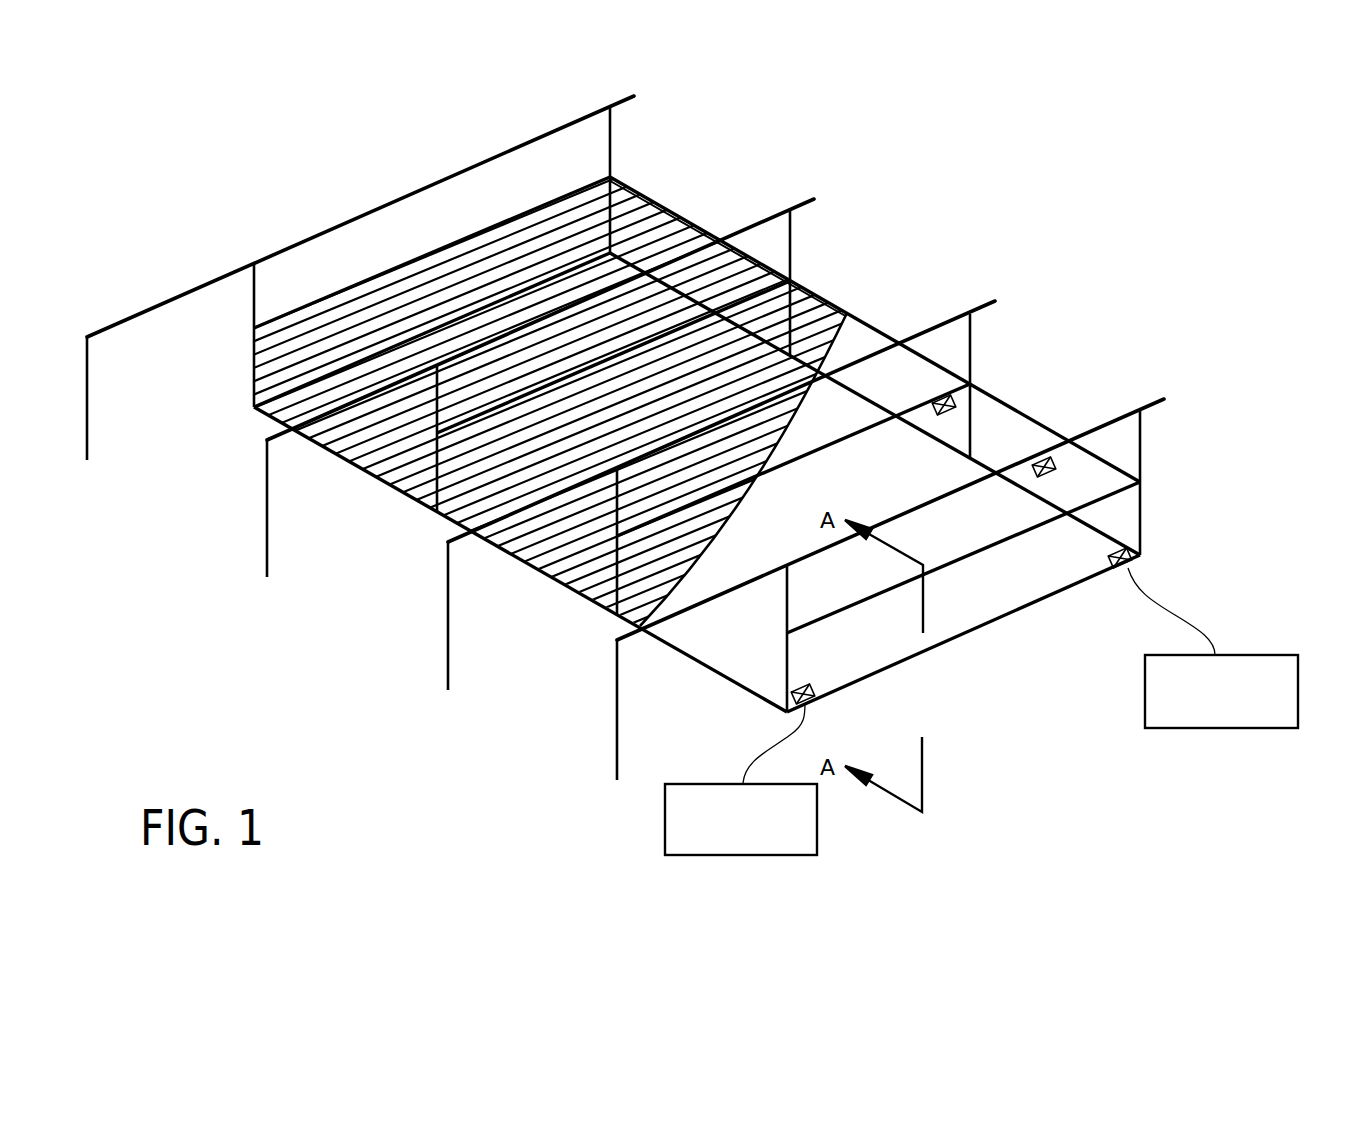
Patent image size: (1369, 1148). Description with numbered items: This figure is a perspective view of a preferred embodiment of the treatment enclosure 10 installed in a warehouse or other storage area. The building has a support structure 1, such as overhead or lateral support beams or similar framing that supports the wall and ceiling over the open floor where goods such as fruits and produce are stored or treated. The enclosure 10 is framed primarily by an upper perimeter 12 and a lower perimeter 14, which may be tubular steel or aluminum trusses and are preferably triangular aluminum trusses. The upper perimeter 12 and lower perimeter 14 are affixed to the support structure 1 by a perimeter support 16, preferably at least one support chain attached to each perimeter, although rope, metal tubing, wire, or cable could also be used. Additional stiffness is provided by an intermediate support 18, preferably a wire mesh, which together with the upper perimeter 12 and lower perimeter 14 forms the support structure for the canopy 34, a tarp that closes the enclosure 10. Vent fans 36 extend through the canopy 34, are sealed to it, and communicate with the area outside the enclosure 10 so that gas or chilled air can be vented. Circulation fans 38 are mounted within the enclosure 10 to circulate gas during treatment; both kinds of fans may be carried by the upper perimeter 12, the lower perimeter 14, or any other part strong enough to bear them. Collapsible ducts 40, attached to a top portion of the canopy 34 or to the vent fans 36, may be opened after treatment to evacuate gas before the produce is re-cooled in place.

The support structure 1 is at (617, 740).
The enclosure 10 is at (847, 257).
The upper perimeter 12 is at (1027, 413).
The lower perimeter 14 is at (990, 623).
The perimeter support 16 is at (1140, 517).
The intermediate support 18 is at (820, 310).
The canopy 34 is at (403, 493).
The vent fans 36 is at (815, 688).
The circulation fans 38 is at (955, 400).
The collapsible ducts 40 is at (737, 856).